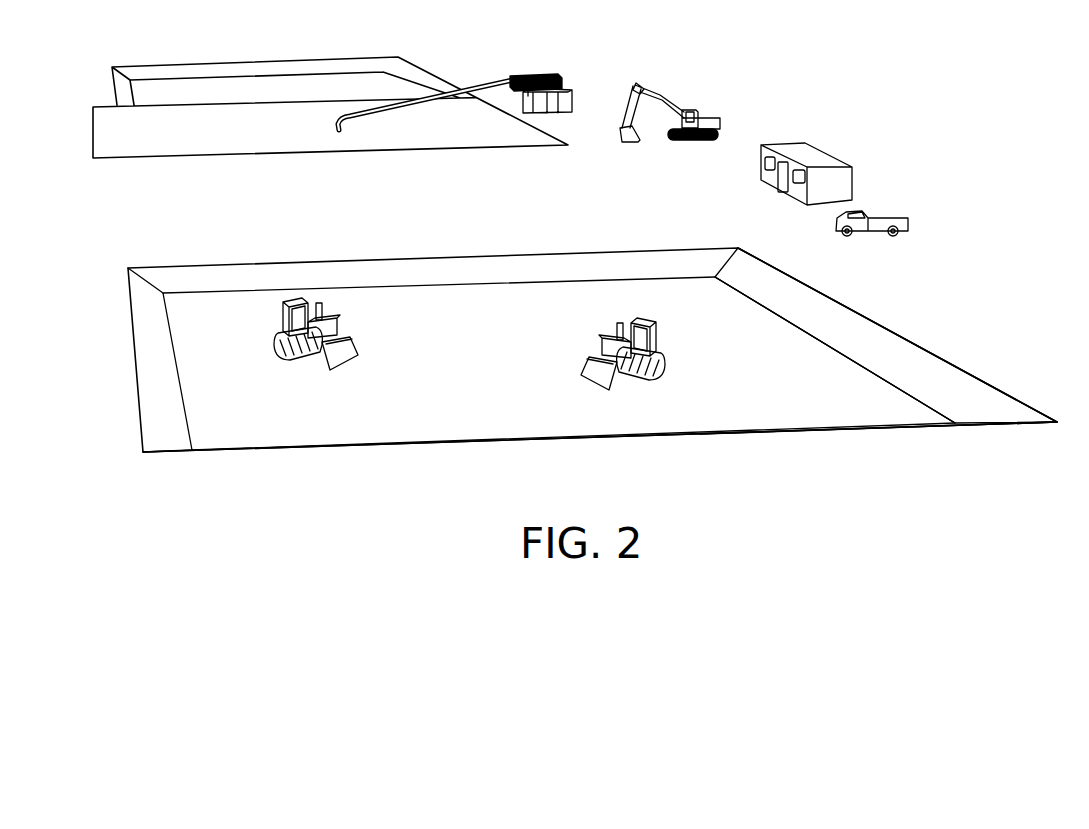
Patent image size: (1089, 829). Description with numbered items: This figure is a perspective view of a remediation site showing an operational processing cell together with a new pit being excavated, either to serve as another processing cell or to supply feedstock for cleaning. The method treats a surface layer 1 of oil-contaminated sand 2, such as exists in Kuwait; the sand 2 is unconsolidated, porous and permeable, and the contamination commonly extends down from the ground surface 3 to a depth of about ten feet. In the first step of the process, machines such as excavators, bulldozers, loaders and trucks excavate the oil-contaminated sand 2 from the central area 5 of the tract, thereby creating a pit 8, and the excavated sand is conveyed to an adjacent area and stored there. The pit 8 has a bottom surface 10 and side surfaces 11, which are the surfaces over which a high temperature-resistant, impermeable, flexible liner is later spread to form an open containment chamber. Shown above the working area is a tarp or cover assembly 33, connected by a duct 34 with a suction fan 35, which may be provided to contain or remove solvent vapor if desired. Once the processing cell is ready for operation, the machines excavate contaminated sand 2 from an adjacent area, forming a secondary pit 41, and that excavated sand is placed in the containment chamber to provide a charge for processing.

The surface layer 1 is at (682, 222).
The oil-contaminated sand 2 is at (587, 235).
The ground surface 3 is at (912, 337).
The central area 5 is at (783, 438).
The pit 8 is at (541, 360).
The bottom surface 10 is at (550, 420).
The side surface 11 is at (828, 318).
The tarp or cover assembly 33 is at (515, 135).
The duct 34 is at (370, 121).
The suction fan 35 is at (533, 73).
The secondary pit 41 is at (988, 380).